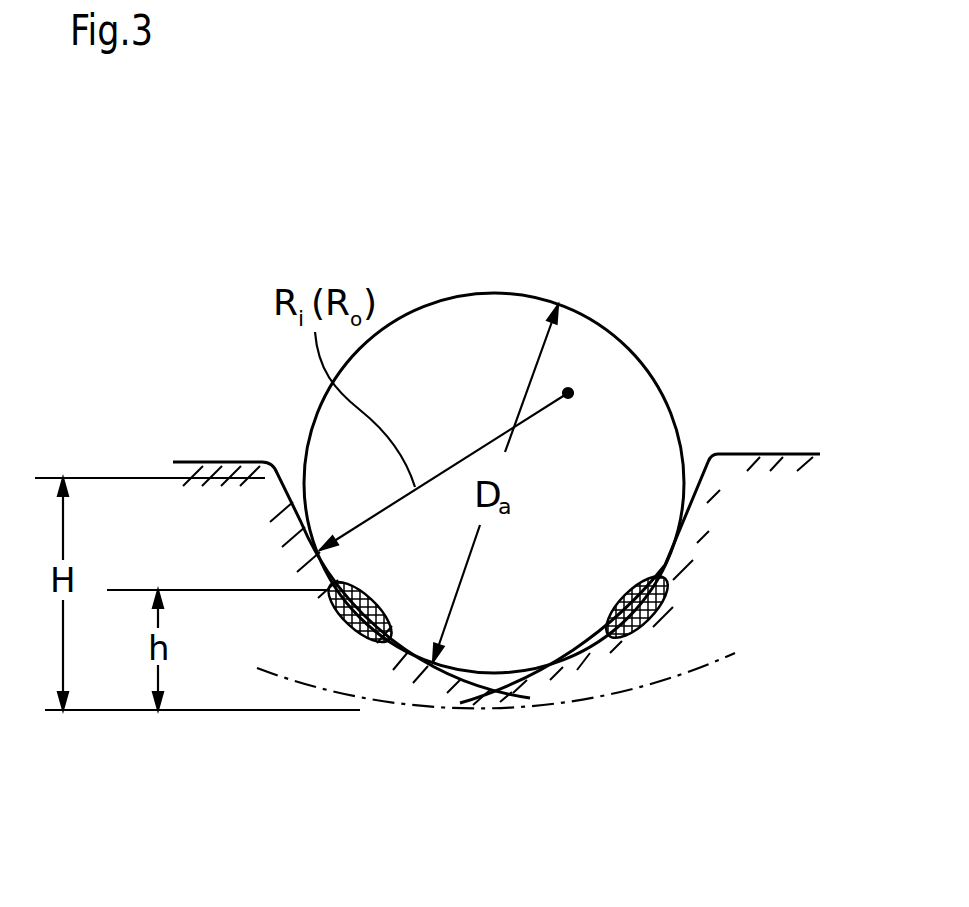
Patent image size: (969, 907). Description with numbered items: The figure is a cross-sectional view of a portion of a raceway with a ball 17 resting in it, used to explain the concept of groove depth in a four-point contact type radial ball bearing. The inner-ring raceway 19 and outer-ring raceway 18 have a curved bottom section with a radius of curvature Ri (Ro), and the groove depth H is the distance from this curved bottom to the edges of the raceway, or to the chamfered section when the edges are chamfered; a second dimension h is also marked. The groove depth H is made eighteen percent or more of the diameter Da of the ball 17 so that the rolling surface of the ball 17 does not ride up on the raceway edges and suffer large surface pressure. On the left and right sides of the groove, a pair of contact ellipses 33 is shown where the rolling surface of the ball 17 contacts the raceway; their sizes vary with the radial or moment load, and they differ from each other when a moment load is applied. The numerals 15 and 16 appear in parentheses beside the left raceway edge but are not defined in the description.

The inner ring 15 is at (242, 472).
The inner ring raceway groove 16 is at (312, 539).
The ball 17 is at (610, 357).
The outer-ring raceway 18 is at (665, 565).
The inner-ring raceway 19 is at (666, 531).
The contact ellipse 33 is at (343, 636).